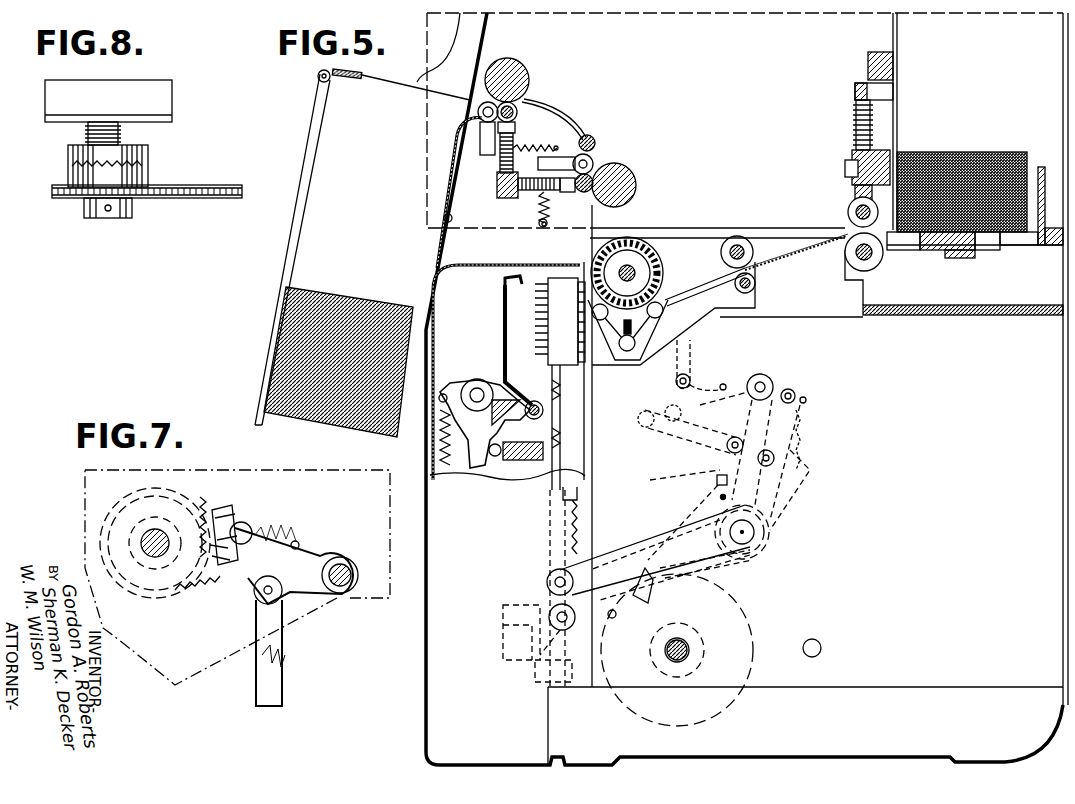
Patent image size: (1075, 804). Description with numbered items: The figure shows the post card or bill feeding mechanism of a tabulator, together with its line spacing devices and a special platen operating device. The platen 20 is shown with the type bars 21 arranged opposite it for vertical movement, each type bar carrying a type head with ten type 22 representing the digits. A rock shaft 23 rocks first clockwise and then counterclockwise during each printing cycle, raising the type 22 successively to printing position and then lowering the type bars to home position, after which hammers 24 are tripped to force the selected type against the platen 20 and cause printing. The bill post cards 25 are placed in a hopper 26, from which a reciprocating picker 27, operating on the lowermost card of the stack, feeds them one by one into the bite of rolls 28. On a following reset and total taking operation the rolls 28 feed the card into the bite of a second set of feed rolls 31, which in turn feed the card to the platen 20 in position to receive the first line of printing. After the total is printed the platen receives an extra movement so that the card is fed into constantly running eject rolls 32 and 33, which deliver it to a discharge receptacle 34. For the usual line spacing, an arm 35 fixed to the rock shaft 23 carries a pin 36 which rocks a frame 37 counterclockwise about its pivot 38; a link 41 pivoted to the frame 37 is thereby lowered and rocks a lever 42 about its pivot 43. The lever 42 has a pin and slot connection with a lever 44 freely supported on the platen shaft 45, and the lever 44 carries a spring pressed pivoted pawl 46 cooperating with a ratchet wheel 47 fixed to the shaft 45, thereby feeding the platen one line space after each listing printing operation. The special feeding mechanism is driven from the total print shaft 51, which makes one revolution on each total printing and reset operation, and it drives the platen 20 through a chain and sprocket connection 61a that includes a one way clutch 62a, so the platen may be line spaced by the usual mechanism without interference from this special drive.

In FIG. 8, the platen 20 is at (172, 100).
In FIG. 5, the platen 20 is at (655, 265).
In FIG. 5, the type bars 21 is at (560, 290).
In FIG. 5, the type 22 is at (540, 312).
In FIG. 5, the rock shaft 23 is at (755, 532).
In FIG. 5, the hammers 24 is at (501, 292).
In FIG. 5, the bill post cards 25 is at (958, 150).
In FIG. 5, the hopper 26 is at (1033, 245).
In FIG. 5, the reciprocating picker 27 is at (990, 243).
In FIG. 5, the rolls 28 is at (850, 210).
In FIG. 5, the feed rolls 31 is at (741, 236).
In FIG. 5, the eject roll 32 is at (637, 185).
In FIG. 5, the eject roll 33 is at (530, 82).
In FIG. 5, the discharge receptacle 34 is at (320, 245).
In FIG. 5, the arm 35 is at (720, 498).
In FIG. 5, the pin 36 is at (716, 479).
In FIG. 5, the frame 37 is at (725, 386).
In FIG. 5, the pivot 38 is at (773, 385).
In FIG. 7, the link 41 is at (276, 645).
In FIG. 5, the link 41 is at (692, 353).
In FIG. 7, the lever 42 is at (305, 562).
In FIG. 7, the pivot 43 is at (340, 593).
In FIG. 7, the lever 44 is at (178, 527).
In FIG. 8, the platen shaft 45 is at (122, 135).
In FIG. 7, the platen shaft 45 is at (160, 535).
In FIG. 5, the platen shaft 45 is at (630, 268).
In FIG. 7, the spring pressed pivoted pawl 46 is at (213, 565).
In FIG. 7, the ratchet wheel 47 is at (173, 580).
In FIG. 5, the total print shaft 51 is at (690, 650).
In FIG. 8, the chain and sprocket connection 61a is at (215, 188).
In FIG. 8, the one way clutch 62a is at (148, 155).